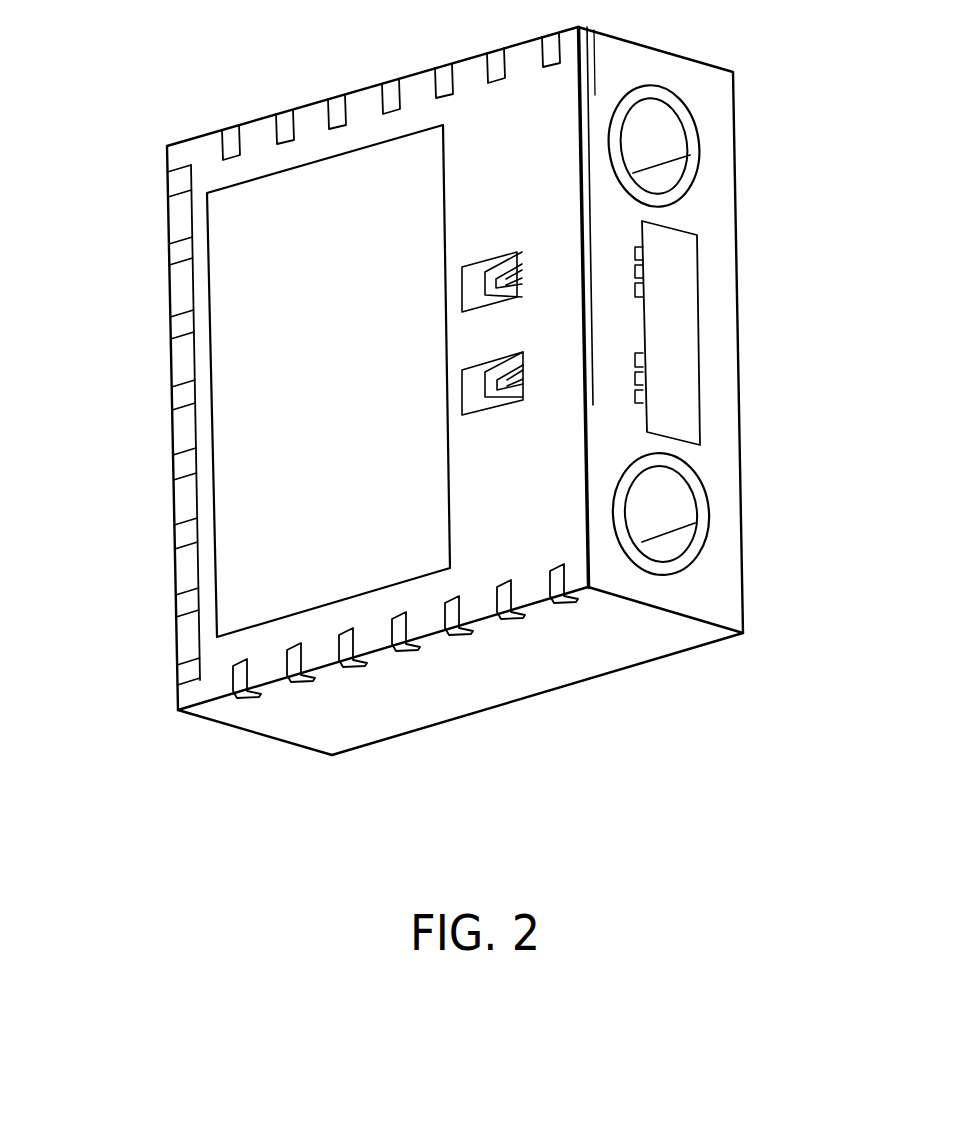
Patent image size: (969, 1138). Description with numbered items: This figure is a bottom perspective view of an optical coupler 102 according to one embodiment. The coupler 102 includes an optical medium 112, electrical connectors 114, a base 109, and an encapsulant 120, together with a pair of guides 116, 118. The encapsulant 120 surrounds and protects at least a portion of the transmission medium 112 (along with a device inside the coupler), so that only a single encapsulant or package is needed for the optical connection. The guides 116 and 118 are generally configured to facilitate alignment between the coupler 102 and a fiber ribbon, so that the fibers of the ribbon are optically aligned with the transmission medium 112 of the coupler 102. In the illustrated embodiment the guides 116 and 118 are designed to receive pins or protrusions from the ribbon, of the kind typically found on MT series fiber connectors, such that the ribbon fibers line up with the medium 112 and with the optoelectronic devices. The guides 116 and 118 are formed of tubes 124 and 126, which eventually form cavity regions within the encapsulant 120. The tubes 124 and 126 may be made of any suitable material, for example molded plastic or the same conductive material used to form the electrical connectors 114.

The coupler 102 is at (397, 400).
The base 109 is at (267, 540).
The optical medium 112 is at (687, 363).
The electrical connectors 114 is at (637, 360).
The guide 116 is at (662, 502).
The guide 118 is at (655, 133).
The encapsulant 120 is at (525, 545).
The tube 124 is at (710, 538).
The tube 126 is at (703, 168).